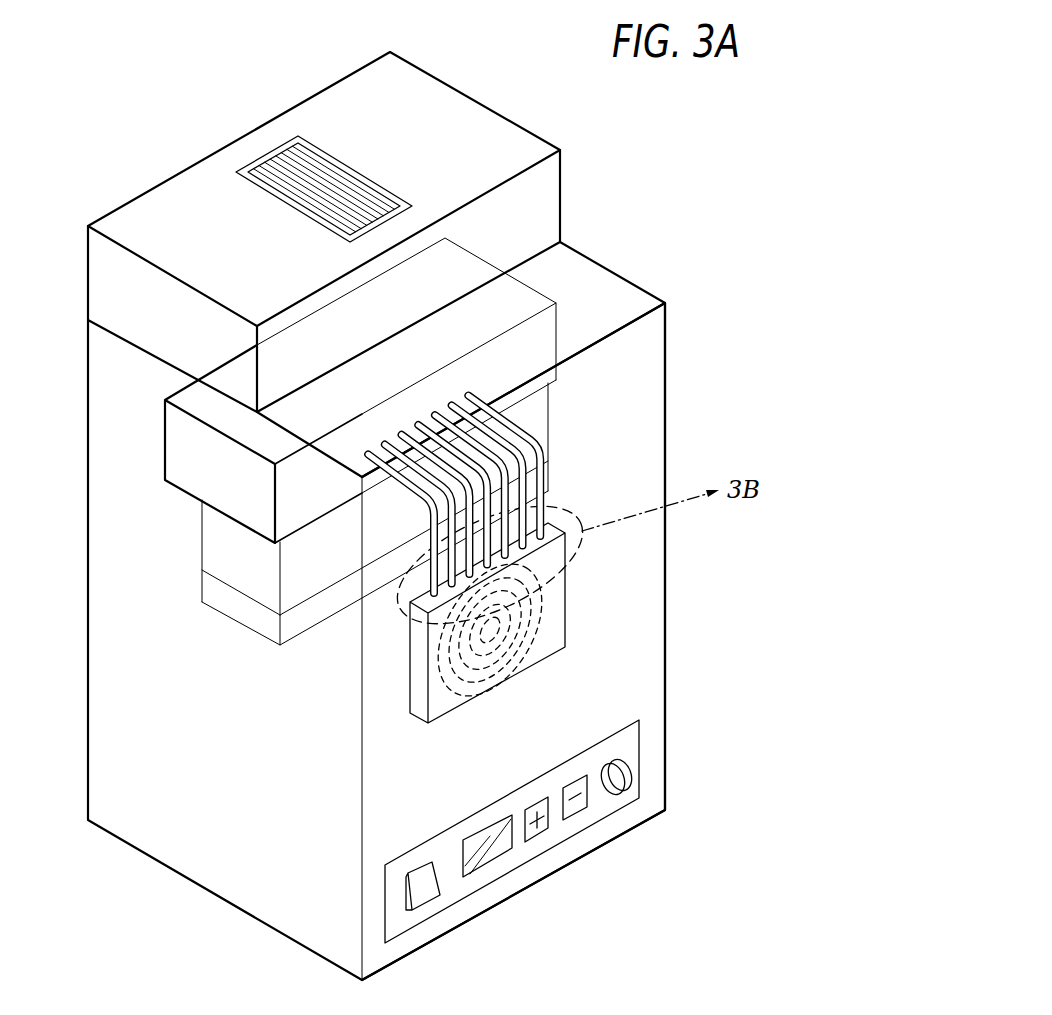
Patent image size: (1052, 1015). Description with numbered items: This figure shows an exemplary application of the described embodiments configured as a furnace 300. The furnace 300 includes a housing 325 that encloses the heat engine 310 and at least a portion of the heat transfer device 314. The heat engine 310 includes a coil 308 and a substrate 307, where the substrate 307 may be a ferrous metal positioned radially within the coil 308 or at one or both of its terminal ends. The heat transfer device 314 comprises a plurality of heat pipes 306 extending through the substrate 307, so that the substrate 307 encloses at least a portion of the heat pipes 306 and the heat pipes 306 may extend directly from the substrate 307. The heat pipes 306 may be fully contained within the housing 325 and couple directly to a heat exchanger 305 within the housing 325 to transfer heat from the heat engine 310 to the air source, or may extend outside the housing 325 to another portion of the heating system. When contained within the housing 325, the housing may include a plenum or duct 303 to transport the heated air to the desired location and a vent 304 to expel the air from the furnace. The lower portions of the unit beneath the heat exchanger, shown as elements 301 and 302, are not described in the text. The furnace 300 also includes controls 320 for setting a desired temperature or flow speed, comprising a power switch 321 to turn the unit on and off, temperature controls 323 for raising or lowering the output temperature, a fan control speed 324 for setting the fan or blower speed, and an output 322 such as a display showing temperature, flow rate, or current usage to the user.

The furnace 300 is at (740, 376).
The base tray 301 is at (220, 592).
The container 302 is at (220, 538).
The plenum or duct 303 is at (542, 201).
The vent 304 is at (300, 176).
The heat exchanger 305 is at (180, 444).
The heat pipes 306 is at (538, 487).
The substrate 307 is at (550, 636).
The coil 308 is at (545, 578).
The heat engine 310 is at (500, 698).
The heat transfer device 314 is at (406, 491).
The controls 320 is at (633, 732).
The power switch 321 is at (420, 897).
The output 322 is at (477, 863).
The temperature controls 323 is at (580, 808).
The fan control speed 324 is at (618, 777).
The housing 325 is at (640, 621).